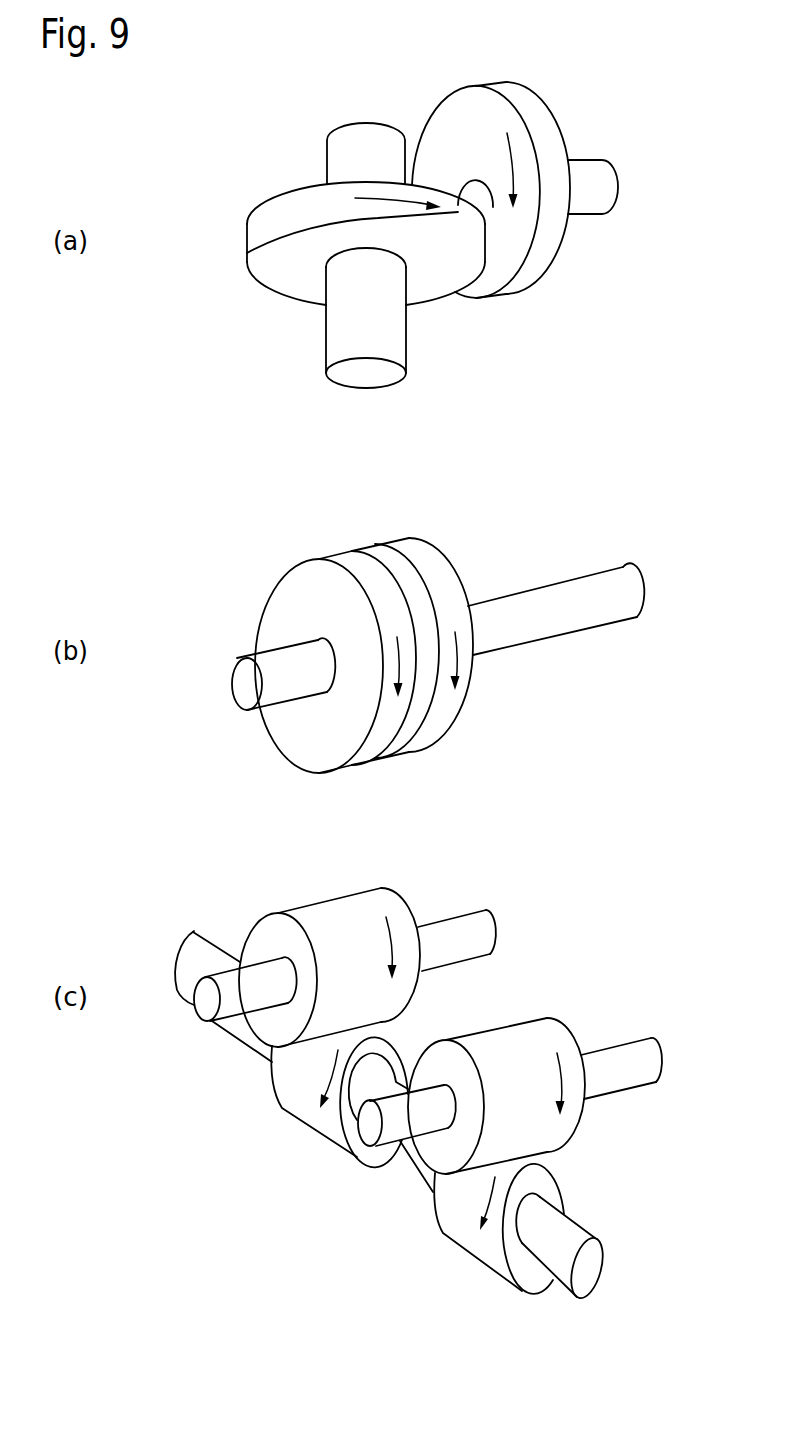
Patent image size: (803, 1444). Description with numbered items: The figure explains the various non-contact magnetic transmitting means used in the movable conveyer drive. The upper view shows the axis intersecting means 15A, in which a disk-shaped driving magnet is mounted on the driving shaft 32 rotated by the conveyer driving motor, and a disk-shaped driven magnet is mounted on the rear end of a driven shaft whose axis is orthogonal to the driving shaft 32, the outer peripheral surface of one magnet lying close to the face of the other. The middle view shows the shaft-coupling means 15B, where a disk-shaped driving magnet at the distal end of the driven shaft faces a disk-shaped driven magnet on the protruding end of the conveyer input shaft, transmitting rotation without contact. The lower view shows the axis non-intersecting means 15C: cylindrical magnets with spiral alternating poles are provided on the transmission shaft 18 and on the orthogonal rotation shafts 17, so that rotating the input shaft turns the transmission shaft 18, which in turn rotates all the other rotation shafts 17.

The axis intersecting means 15A is at (240, 122).
The shaft-coupling means 15B is at (284, 528).
The axis non-intersecting means 15C is at (578, 898).
The driving shaft 32 is at (353, 138).
The rotation shaft 17 is at (458, 933).
The transmission shaft 18 is at (575, 1233).